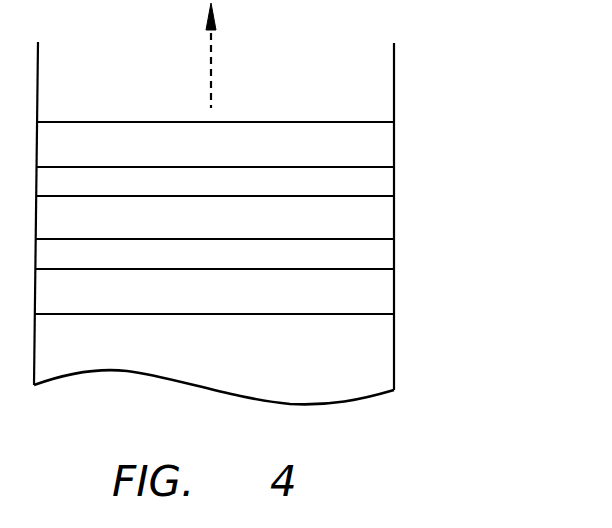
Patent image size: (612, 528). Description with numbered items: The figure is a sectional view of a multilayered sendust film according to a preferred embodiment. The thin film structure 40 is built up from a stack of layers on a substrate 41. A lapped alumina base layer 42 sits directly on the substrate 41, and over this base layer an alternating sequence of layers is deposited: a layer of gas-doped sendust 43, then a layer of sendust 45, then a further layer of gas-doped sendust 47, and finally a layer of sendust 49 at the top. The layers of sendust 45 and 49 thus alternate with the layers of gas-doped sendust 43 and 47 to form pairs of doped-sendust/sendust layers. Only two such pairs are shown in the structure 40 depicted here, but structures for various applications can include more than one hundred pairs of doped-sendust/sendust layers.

The thin film structure 40 is at (456, 436).
The substrate 41 is at (385, 355).
The lapped alumina base layer 42 is at (385, 290).
The layer of gas-doped sendust 43 is at (385, 260).
The layer of sendust 45 is at (385, 220).
The layer of gas-doped sendust 47 is at (385, 180).
The layer of sendust 49 is at (385, 140).